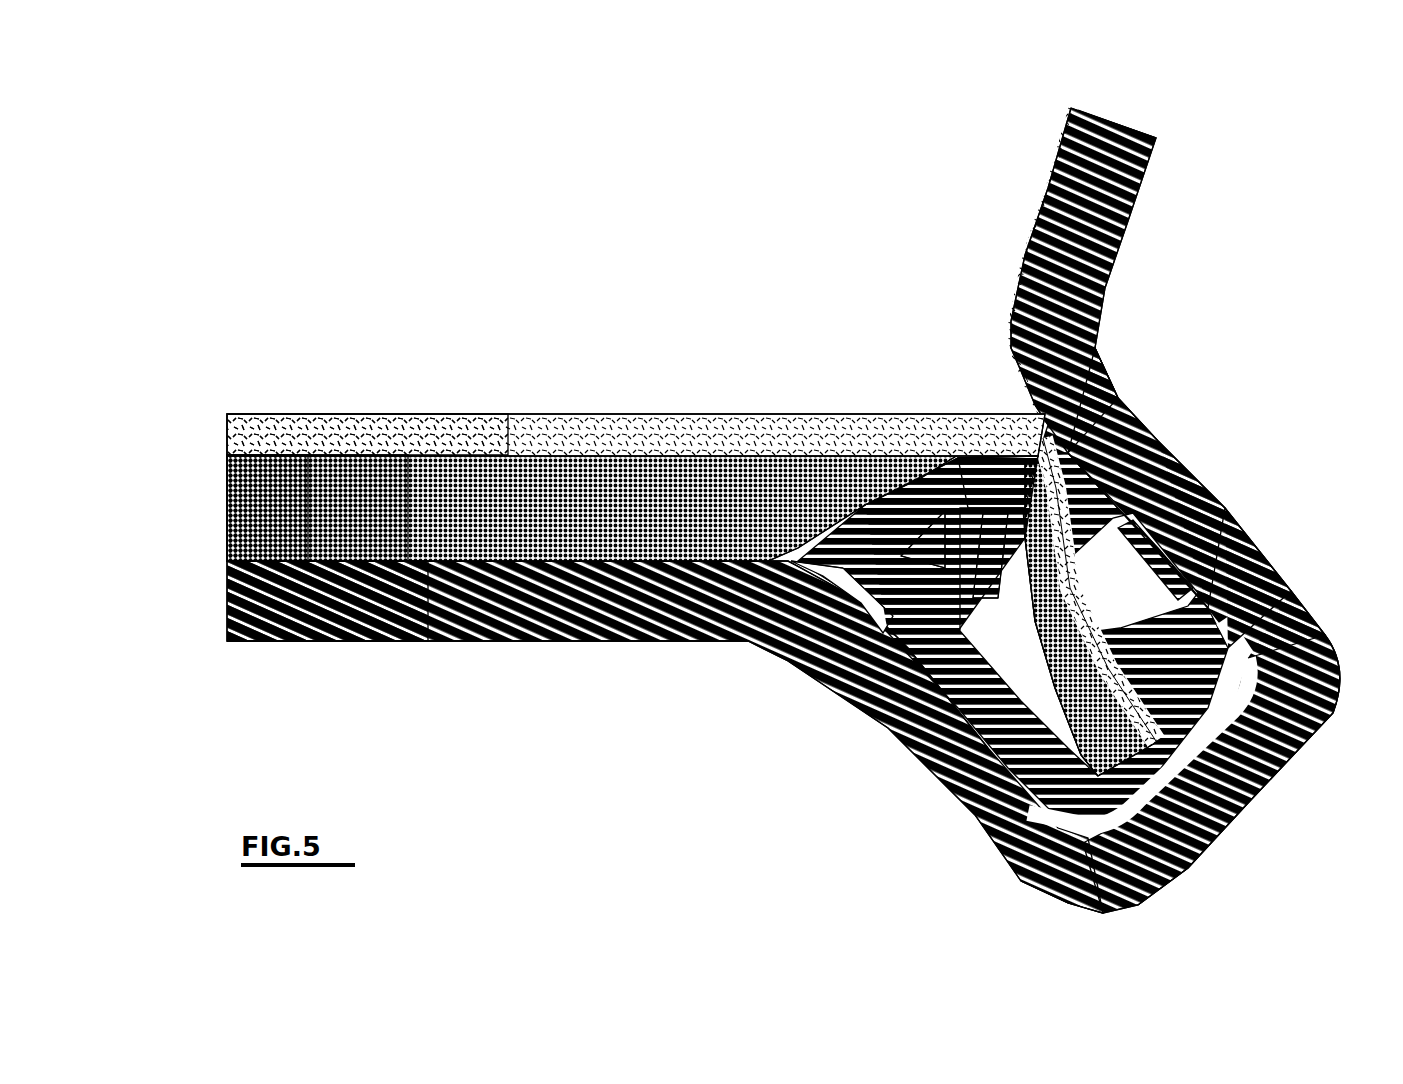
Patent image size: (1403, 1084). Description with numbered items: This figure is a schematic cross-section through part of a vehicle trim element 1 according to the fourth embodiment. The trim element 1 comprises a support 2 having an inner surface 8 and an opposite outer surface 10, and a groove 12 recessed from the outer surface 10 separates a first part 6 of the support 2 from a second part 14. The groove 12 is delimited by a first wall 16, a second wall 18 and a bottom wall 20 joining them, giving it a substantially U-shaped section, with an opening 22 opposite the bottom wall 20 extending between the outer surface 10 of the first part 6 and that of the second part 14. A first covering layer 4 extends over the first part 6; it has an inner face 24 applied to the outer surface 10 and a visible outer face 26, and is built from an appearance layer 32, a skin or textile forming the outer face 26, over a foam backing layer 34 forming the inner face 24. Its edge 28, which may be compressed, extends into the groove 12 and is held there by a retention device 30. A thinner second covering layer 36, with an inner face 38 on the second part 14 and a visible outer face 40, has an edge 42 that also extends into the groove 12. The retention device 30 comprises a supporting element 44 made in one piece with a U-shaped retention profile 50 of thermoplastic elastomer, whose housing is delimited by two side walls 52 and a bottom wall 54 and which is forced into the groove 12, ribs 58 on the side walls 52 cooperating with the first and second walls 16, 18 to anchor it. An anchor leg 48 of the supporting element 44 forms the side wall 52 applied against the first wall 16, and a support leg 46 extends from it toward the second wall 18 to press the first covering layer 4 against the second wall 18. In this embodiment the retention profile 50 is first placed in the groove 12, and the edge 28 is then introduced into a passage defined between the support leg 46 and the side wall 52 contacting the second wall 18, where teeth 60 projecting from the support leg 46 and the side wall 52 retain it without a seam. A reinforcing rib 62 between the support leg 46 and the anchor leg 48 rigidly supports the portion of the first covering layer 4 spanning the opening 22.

The vehicle trim element 1 is at (1275, 250).
The support 2 is at (1080, 185).
The first covering layer 4 is at (258, 490).
The first part of the support 6 is at (533, 600).
The inner surface 8 is at (597, 640).
The outer surface 10 is at (395, 545).
The groove 12 is at (1258, 800).
The second part of the support 14 is at (1090, 327).
The first wall 16 is at (870, 715).
The second wall 18 is at (1207, 500).
The bottom wall 20 is at (1183, 845).
The opening 22 is at (793, 560).
The inner face 24 is at (398, 560).
The outer face 26 is at (445, 418).
The edge 28 is at (1123, 477).
The retention device 30 is at (1312, 617).
The appearance layer 32 is at (545, 420).
The backing layer 34 is at (287, 527).
The second covering layer 36 is at (1067, 107).
The inner face 38 is at (1083, 140).
The outer face 40 is at (1040, 177).
The edge 42 is at (1150, 493).
The supporting element 44 is at (870, 497).
The support leg 46 is at (990, 500).
The anchor leg 48 is at (913, 763).
The retention profile 50 is at (1047, 853).
The side walls 52 is at (1195, 540).
The bottom wall 54 is at (1267, 763).
The rib 58 is at (1257, 567).
The teeth 60 is at (1035, 478).
The reinforcing rib 62 is at (830, 610).